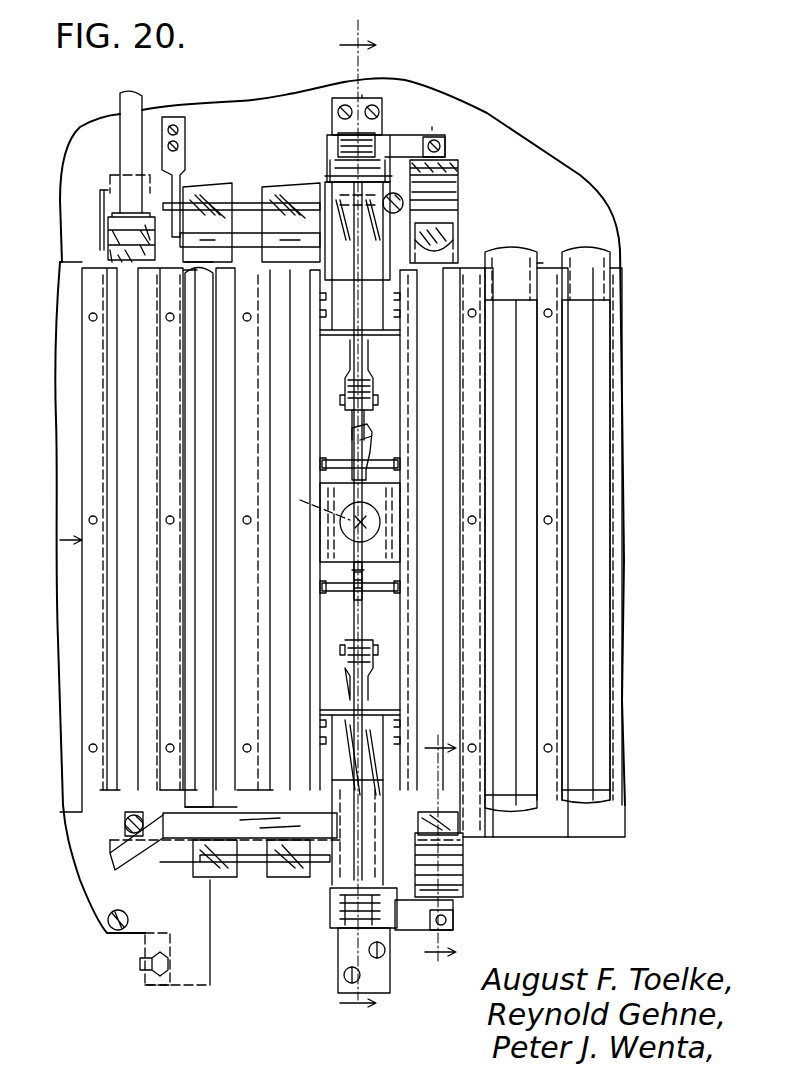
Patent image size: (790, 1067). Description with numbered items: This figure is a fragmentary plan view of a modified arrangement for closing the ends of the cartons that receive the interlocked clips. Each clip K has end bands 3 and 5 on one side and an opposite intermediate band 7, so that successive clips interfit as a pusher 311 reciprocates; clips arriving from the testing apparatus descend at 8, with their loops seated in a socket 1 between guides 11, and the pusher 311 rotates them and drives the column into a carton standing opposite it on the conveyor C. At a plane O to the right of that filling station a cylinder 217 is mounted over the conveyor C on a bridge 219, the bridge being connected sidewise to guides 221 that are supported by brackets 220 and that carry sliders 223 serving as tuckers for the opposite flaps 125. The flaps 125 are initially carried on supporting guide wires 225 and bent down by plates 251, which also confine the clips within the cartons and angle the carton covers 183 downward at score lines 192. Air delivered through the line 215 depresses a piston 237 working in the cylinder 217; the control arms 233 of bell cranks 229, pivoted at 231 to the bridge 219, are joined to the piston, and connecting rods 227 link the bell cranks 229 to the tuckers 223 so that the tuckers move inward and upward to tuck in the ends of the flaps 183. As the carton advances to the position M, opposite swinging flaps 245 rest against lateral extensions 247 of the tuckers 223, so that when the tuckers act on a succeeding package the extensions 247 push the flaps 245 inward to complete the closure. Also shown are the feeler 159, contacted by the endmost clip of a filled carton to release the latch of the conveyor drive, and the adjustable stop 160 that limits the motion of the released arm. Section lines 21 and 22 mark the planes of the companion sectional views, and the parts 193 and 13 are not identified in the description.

The pusher 311 is at (125, 108).
The flaps 125 is at (70, 188).
The guides 11 is at (100, 205).
The end band 5 is at (110, 228).
The end band 3 is at (150, 240).
The socket 1 is at (148, 255).
The intermediate band 7 is at (135, 262).
The clip descent position 8 is at (110, 262).
The clip K is at (123, 279).
The guide plates 251 is at (245, 233).
The plate 193 is at (203, 265).
The score lines 192 is at (447, 230).
The brackets 220 is at (334, 125).
The sliders 223 is at (330, 143).
The supporting guide wires 225 is at (330, 185).
The guides 221 is at (330, 240).
The bridge 219 is at (393, 355).
The section line 21 is at (353, 525).
The connecting rods 227 is at (355, 358).
The bell cranks 229 is at (350, 428).
The line 215 is at (372, 437).
The pivot 231 is at (325, 462).
The cylinder 217 is at (400, 497).
The control arms 233 is at (366, 520).
The piston 237 is at (311, 504).
The section line 22 is at (440, 853).
The lateral extensions 247 is at (445, 158).
The swinging flaps 245 is at (460, 178).
The plane O is at (367, 85).
The closing station M is at (436, 115).
The conveyor belt C is at (551, 258).
The feeler 159 is at (130, 822).
The adjustable stop 160 is at (148, 963).
The carton flaps 183 is at (212, 878).
The frame 13 is at (610, 837).